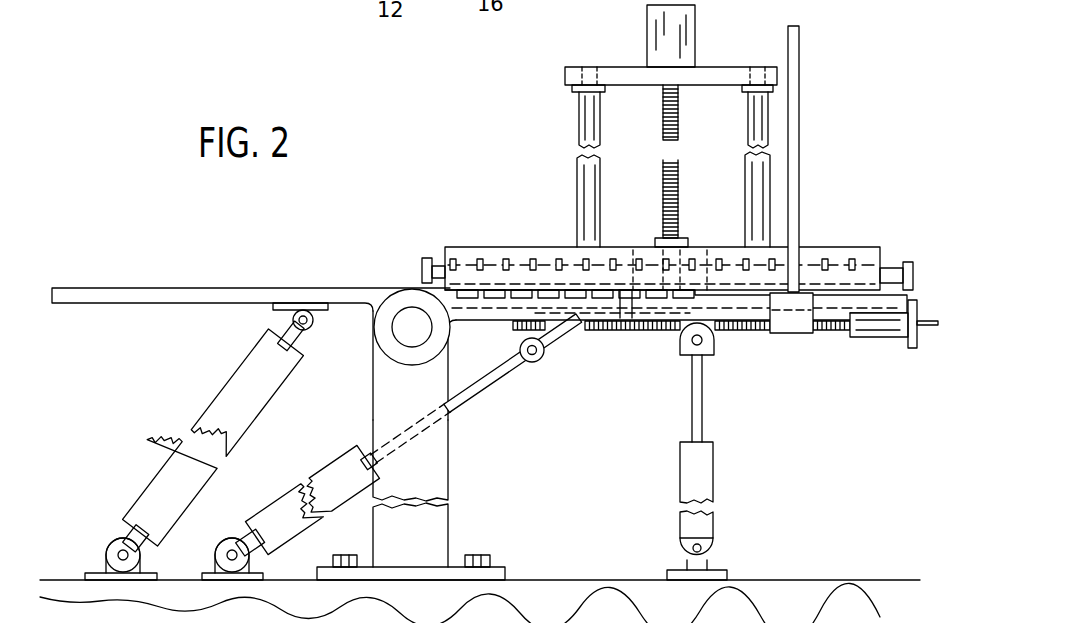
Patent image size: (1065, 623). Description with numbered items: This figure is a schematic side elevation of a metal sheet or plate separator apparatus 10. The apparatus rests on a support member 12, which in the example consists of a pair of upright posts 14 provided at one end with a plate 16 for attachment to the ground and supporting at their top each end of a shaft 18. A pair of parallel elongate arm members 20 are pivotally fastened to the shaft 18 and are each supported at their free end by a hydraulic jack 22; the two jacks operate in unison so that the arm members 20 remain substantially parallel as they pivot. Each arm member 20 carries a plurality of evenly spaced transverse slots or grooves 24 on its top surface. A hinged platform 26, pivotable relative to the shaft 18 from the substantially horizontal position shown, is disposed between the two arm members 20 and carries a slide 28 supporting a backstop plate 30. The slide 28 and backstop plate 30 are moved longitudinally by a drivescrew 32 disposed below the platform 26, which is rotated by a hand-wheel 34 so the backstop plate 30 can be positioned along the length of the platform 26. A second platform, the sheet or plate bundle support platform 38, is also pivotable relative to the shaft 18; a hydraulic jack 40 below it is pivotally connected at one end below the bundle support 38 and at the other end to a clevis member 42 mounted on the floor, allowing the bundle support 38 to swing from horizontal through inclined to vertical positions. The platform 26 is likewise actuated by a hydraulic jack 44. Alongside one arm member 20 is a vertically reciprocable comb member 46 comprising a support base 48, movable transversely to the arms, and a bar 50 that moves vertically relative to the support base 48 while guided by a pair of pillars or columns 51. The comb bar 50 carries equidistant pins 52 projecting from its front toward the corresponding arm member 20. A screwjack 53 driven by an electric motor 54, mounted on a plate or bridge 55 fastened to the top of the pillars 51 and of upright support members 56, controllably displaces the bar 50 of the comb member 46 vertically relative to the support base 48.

The metal sheet or plate separator apparatus 10 is at (213, 357).
The support member 12 is at (452, 457).
The upright posts 14 is at (443, 366).
The plate 16 is at (500, 566).
The shaft 18 is at (403, 330).
The elongate arm members 20 is at (698, 316).
The hydraulic jack 22 is at (680, 492).
The transverse slots or grooves 24 is at (626, 322).
The hinged platform 26 is at (743, 310).
The slide 28 is at (789, 300).
The backstop plate 30 is at (800, 146).
The drivescrew 32 is at (757, 332).
The hand-wheel 34 is at (907, 340).
The sheet or plate bundle support platform 38 is at (153, 298).
The hydraulic jack 40 is at (160, 475).
The clevis member 42 is at (110, 559).
The hydraulic jack 44 is at (293, 498).
The comb member 46 is at (462, 246).
The support base 48 is at (894, 259).
The bar 50 is at (493, 257).
The pillars or columns 51 is at (585, 130).
The pins 52 is at (643, 260).
The screwjack 53 is at (663, 125).
The electric motor 54 is at (695, 33).
The plate or bridge 55 is at (625, 72).
The upright support members 56 is at (577, 120).